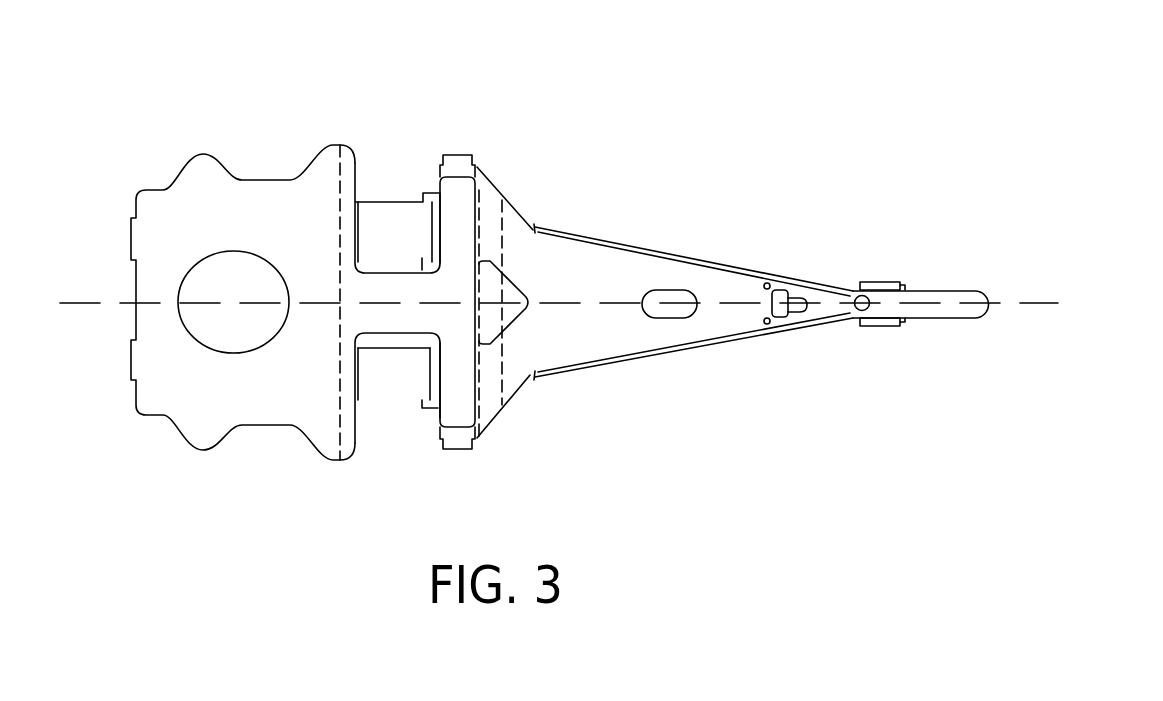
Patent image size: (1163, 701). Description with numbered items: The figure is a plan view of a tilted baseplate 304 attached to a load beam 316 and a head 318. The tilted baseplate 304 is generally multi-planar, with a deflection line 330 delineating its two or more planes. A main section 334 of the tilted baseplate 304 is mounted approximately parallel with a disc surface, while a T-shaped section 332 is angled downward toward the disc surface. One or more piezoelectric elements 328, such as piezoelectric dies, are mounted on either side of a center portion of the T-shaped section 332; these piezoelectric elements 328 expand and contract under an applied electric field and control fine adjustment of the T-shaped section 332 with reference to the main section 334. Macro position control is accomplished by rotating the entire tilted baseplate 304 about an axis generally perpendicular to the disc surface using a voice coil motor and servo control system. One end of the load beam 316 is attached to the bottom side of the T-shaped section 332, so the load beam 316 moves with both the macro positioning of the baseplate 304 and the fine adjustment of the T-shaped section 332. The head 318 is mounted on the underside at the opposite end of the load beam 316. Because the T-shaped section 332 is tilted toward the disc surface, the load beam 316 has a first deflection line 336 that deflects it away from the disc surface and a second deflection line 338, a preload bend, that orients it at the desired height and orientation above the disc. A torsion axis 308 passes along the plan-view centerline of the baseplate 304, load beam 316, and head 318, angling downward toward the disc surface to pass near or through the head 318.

The tilted baseplate 304 is at (605, 298).
The torsion axis 308 is at (1037, 303).
The load beam 316 is at (605, 342).
The head 318 is at (885, 325).
The piezoelectric elements 328 is at (380, 202).
The deflection line 330 is at (350, 340).
The T-shaped section 332 is at (458, 331).
The main section 334 is at (262, 229).
The first deflection line 336 is at (480, 195).
The second deflection line 338 is at (515, 231).